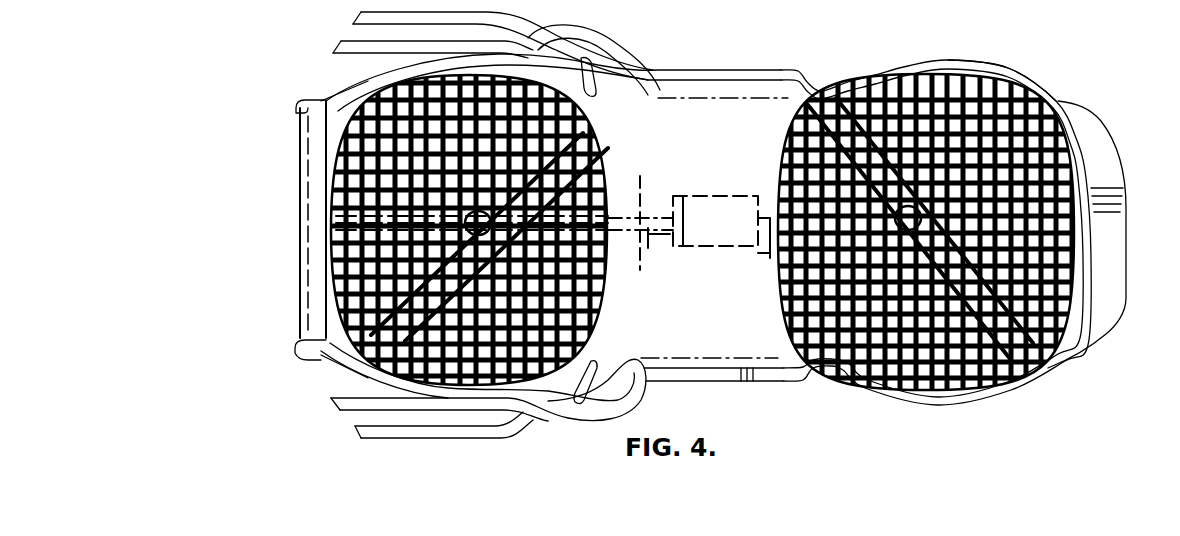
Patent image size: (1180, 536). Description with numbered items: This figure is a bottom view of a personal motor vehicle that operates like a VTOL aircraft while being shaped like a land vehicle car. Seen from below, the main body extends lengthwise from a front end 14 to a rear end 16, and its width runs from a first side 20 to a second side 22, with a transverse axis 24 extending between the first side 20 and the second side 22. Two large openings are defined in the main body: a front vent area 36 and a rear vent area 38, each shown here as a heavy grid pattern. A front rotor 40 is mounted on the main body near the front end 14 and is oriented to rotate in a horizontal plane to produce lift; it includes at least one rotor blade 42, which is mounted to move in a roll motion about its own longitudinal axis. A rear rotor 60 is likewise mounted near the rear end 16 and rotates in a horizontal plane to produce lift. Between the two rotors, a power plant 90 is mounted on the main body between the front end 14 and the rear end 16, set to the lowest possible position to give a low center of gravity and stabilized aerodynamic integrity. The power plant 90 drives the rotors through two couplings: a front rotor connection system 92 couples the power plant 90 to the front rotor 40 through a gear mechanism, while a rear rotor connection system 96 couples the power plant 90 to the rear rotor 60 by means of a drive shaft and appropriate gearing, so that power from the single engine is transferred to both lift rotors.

The front end 14 is at (1097, 112).
The rear end 16 is at (288, 128).
The first side 20 is at (773, 62).
The second side 22 is at (748, 378).
The transverse axis 24 is at (636, 134).
The front vent area 36 is at (985, 72).
The rear vent area 38 is at (574, 296).
The front rotor 40 is at (940, 52).
The rotor blade 42 is at (1007, 360).
The rear rotor 60 is at (609, 145).
The power plant 90 is at (719, 212).
The front rotor connection system 92 is at (757, 250).
The rear rotor connection system 96 is at (641, 228).